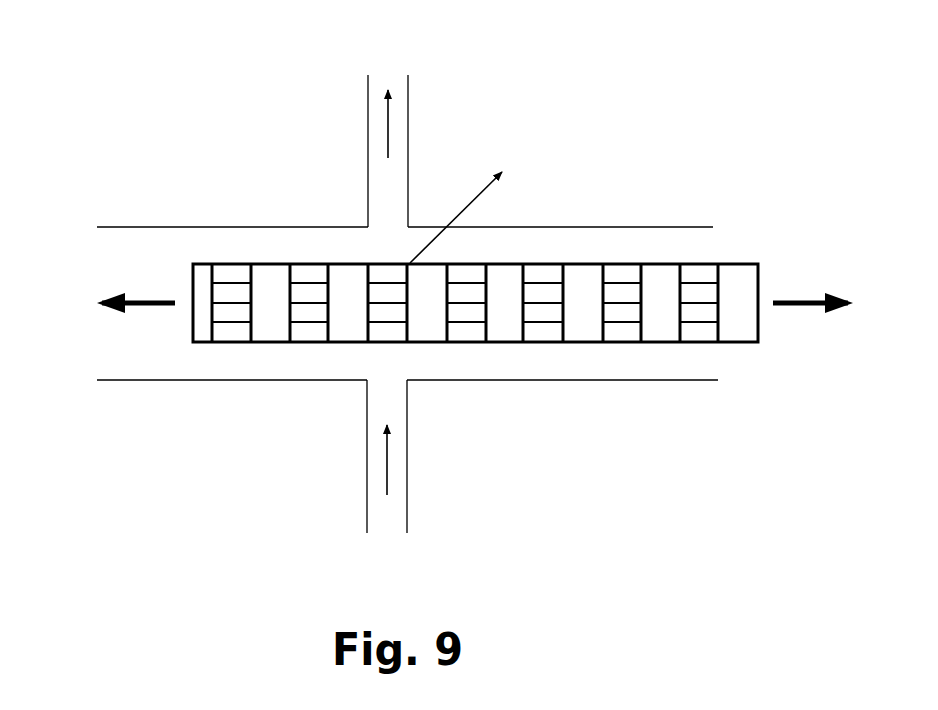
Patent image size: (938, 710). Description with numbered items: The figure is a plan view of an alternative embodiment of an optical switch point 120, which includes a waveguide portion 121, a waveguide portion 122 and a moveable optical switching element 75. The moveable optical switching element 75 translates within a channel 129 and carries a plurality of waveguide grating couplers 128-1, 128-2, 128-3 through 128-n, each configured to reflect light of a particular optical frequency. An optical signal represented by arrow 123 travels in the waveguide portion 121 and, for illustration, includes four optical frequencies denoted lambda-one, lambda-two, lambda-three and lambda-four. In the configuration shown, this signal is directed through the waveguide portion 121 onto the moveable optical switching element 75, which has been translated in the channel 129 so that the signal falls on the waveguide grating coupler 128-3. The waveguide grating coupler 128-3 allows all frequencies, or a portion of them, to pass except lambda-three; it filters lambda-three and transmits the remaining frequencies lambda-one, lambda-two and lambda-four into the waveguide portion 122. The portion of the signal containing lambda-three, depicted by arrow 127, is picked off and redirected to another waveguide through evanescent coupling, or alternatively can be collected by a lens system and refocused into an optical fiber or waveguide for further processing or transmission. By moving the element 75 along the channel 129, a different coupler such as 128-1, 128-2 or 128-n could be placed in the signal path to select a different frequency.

The optical switch point 120 is at (250, 72).
The waveguide portion 121 is at (407, 422).
The waveguide portion 122 is at (408, 128).
The optical signal 123 is at (387, 462).
The arrow 127 is at (457, 213).
The moveable optical switching element 75 is at (729, 264).
The waveguide grating coupler 128-1 is at (213, 323).
The waveguide grating coupler 128-2 is at (285, 323).
The waveguide grating coupler 128-3 is at (407, 320).
The waveguide grating coupler 128-n is at (720, 323).
The channel 129 is at (115, 337).